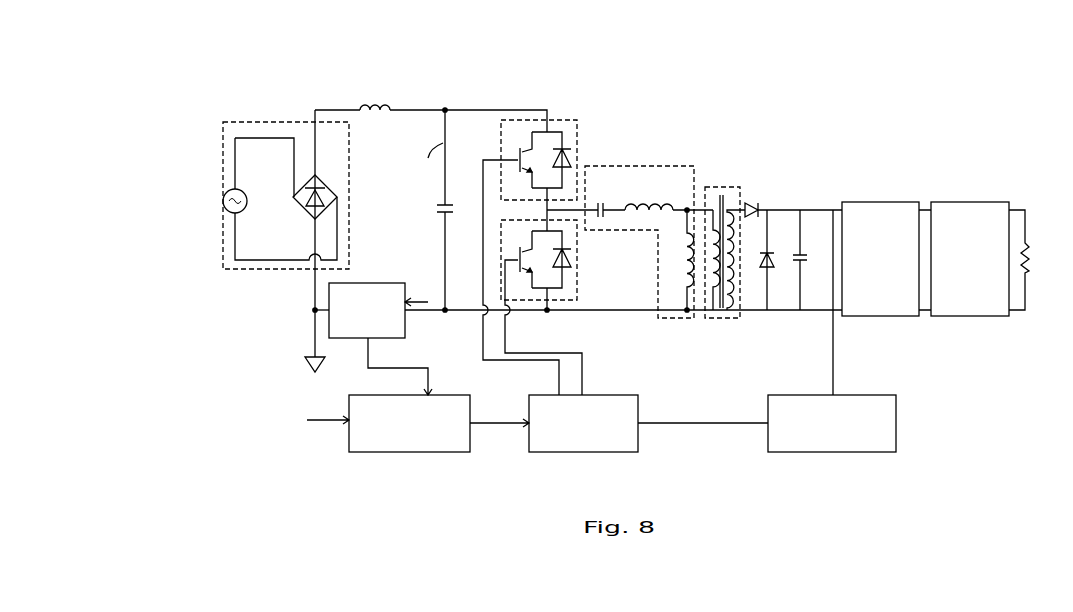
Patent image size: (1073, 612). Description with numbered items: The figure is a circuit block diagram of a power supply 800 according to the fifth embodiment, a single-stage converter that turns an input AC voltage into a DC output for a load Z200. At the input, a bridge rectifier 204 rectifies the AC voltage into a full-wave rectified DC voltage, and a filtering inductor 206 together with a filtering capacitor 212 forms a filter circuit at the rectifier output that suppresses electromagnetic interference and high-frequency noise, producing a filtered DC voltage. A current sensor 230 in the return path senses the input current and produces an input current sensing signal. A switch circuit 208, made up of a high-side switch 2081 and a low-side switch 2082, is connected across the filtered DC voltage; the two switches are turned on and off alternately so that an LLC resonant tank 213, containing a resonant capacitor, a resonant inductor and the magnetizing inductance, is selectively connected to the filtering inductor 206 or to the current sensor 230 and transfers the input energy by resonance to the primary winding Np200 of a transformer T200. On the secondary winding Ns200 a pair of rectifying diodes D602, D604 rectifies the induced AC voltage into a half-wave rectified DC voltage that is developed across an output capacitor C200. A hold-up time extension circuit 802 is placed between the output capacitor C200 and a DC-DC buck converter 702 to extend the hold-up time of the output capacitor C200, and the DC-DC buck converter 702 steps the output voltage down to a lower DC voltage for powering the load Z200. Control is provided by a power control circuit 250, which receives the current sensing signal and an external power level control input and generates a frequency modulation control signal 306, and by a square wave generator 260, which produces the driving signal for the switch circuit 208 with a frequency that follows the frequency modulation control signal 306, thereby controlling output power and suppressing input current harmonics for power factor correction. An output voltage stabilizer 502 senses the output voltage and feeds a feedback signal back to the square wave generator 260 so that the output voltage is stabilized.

The power supply 800 is at (985, 64).
The bridge rectifier 204 is at (325, 182).
The filtering inductor 206 is at (375, 114).
The filtering capacitor 212 is at (440, 220).
The current sensor 230 is at (378, 283).
The power control circuit 250 is at (432, 452).
The square wave generator 260 is at (598, 452).
The frequency modulation control signal 306 is at (481, 423).
The output voltage stabilizer 502 is at (848, 452).
The switch circuit 208 is at (558, 113).
The high-side switch 2081 is at (501, 137).
The low-side switch 2082 is at (578, 268).
The LLC resonant tank 213 is at (675, 320).
The transformer T200 is at (742, 270).
The primary winding Np200 is at (718, 292).
The secondary winding Ns200 is at (731, 228).
The rectifying diode D602 is at (753, 203).
The rectifying diode D604 is at (766, 268).
The output capacitor C200 is at (798, 267).
The hold-up time extension circuit 802 is at (885, 201).
The DC-DC buck converter 702 is at (970, 201).
The load Z200 is at (1026, 285).